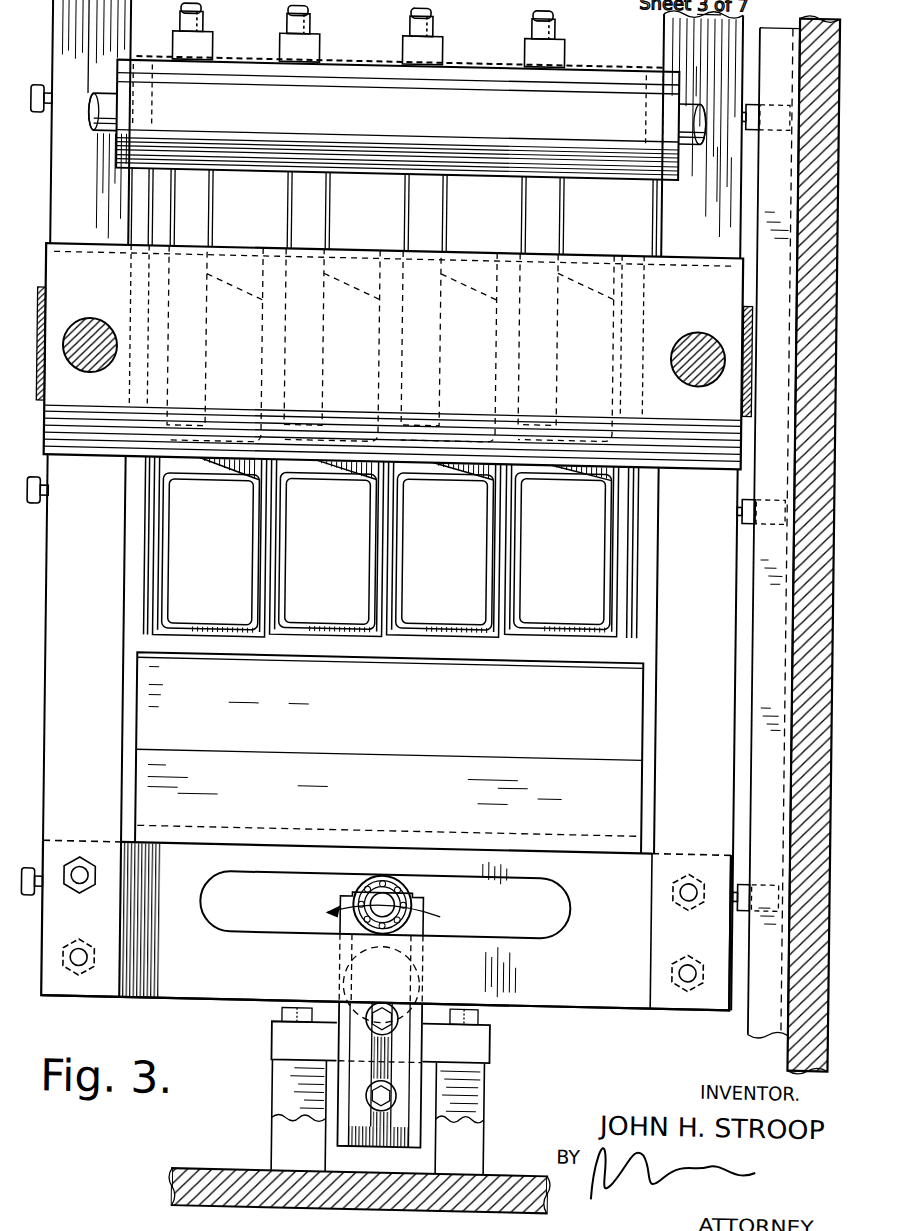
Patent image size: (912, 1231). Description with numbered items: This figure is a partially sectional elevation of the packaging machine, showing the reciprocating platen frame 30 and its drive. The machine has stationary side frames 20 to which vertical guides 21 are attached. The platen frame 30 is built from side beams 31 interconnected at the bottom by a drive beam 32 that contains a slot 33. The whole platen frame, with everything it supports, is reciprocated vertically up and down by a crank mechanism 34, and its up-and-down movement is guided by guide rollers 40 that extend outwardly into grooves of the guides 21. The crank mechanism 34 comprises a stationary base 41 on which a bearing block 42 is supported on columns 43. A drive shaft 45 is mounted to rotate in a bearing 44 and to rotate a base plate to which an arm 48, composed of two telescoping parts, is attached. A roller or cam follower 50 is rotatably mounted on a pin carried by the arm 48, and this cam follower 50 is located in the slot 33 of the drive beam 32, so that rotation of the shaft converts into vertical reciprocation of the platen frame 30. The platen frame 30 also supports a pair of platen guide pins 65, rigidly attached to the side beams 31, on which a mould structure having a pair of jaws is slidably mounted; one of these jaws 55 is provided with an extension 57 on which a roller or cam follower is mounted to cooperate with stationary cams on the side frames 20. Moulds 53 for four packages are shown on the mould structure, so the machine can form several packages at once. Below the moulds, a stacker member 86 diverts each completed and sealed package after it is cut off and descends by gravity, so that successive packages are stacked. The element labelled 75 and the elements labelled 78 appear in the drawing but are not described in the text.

The side frame 20 is at (816, 492).
The vertical guide 21 is at (765, 1005).
The platen frame 30 is at (650, 1006).
The side beam 31 is at (36, 716).
The drive beam 32 is at (583, 1003).
The slot 33 is at (482, 890).
The crank mechanism 34 is at (356, 1087).
The guide roller 40 is at (33, 93).
The stationary base 41 is at (242, 1154).
The bearing block 42 is at (281, 1033).
The column 43 is at (284, 1141).
The bearing 44 is at (424, 984).
The drive shaft 45 is at (356, 1040).
The arm 48 is at (416, 907).
The cam follower 50 is at (386, 893).
The mould 53 is at (228, 275).
The jaw 55 is at (350, 251).
The extension 57 is at (42, 306).
The platen guide pin 65 is at (88, 376).
The roller 75 is at (448, 154).
The cap screws 78 is at (196, 20).
The stacker member 86 is at (414, 710).